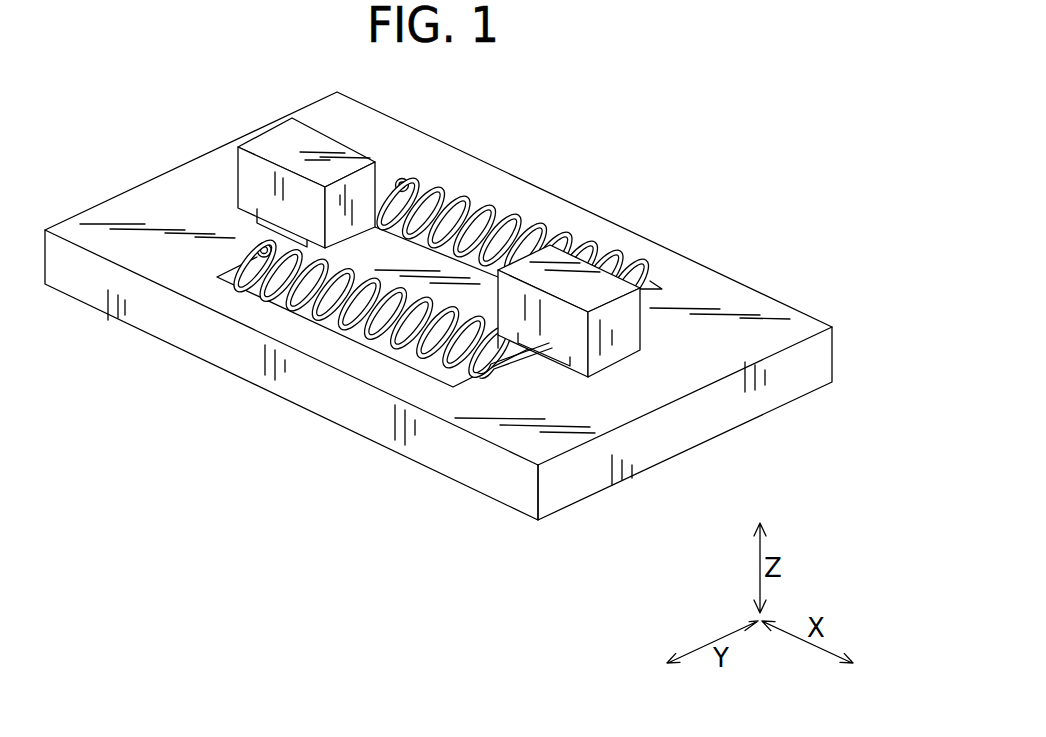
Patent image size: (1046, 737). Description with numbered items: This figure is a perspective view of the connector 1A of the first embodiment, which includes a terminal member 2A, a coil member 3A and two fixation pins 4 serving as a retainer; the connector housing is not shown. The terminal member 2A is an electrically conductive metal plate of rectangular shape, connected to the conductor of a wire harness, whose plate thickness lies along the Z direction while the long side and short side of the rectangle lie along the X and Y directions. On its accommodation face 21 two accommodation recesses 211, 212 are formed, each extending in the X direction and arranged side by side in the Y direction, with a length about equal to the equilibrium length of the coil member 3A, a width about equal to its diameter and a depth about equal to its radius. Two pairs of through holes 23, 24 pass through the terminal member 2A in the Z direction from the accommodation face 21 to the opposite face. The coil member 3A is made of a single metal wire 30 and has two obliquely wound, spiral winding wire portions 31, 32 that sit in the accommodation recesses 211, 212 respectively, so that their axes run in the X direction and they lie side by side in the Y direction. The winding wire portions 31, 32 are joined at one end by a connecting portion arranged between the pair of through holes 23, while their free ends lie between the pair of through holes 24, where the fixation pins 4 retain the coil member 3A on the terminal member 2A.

The connector 1A is at (713, 153).
The terminal member 2A is at (819, 362).
The accommodation face 21 is at (143, 197).
The accommodation recess 211 is at (234, 270).
The accommodation recess 212 is at (457, 187).
The through holes 23 is at (258, 229).
The through holes 24 is at (555, 357).
The coil member 3A is at (514, 206).
The wire 30 is at (412, 182).
The winding wire portion 31 is at (355, 336).
The winding wire portion 32 is at (531, 219).
The fixation pins 4 is at (273, 141).